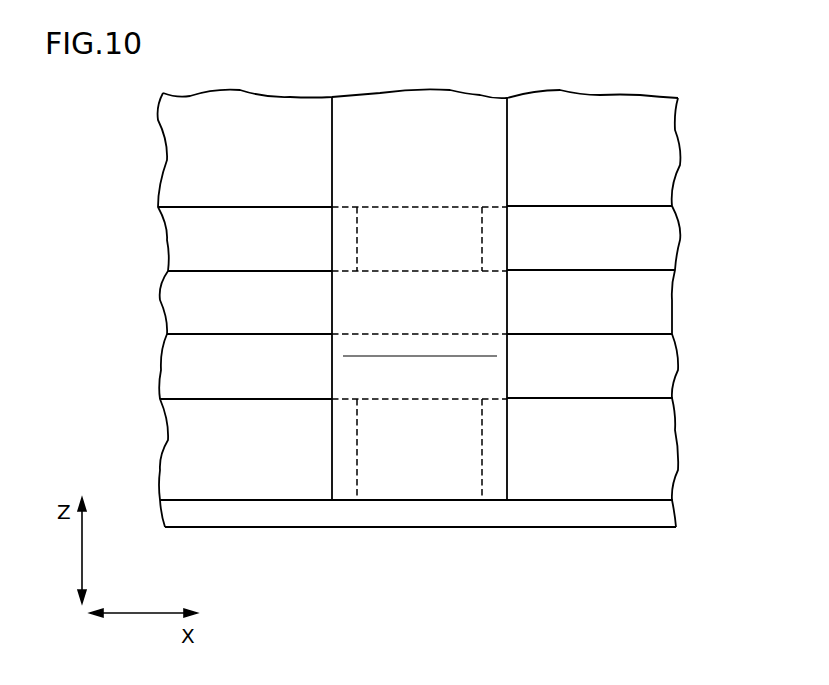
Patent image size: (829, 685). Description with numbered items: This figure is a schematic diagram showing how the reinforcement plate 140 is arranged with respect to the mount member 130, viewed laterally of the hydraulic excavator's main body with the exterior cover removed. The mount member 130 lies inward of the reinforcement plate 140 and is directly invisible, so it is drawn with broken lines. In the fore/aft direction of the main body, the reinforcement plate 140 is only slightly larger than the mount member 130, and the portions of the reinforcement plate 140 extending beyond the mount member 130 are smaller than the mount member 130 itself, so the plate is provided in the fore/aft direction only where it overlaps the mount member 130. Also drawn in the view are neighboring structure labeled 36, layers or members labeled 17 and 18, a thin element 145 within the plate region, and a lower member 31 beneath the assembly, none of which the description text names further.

The reinforcement plate 140 is at (413, 133).
The insulating layer 36 is at (573, 130).
The first wiring layer 17 is at (653, 303).
The second wiring layer 18 is at (653, 370).
The conductive line 145 is at (405, 357).
The mount member 130 is at (482, 443).
The substrate 31 is at (584, 513).